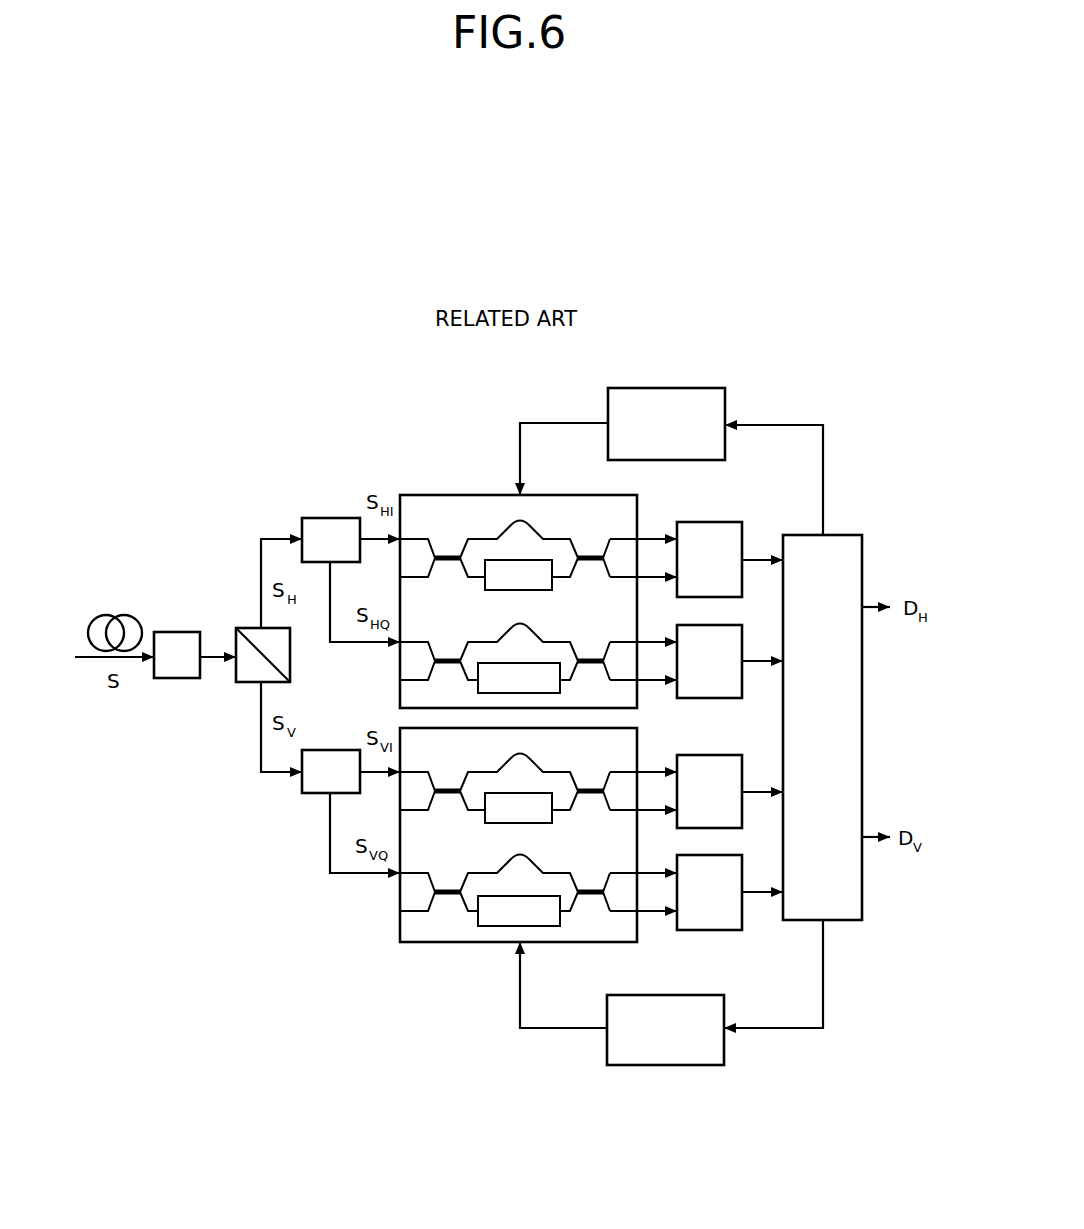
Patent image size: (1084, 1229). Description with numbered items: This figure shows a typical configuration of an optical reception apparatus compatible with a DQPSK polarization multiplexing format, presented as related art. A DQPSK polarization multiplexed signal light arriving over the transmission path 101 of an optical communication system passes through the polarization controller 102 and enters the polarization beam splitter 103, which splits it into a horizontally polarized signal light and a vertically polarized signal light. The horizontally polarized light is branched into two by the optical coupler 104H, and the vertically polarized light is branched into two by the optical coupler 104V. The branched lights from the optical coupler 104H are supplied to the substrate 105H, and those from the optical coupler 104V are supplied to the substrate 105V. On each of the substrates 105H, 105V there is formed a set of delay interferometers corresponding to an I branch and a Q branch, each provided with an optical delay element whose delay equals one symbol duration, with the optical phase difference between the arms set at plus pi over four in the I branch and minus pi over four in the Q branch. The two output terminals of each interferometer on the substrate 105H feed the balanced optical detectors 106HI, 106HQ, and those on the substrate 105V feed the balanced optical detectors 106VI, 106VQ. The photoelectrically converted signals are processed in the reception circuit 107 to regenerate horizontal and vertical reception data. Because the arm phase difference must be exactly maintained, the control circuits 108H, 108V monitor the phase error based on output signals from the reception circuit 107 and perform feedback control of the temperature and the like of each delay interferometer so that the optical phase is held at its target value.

The transmission path 101 is at (113, 615).
The polarization controller 102 is at (170, 632).
The polarization beam splitter 103 is at (243, 628).
The optical coupler 104H is at (318, 518).
The optical coupler 104V is at (312, 793).
The substrate 105H is at (443, 495).
The substrate 105V is at (436, 942).
The balanced optical detector 106HI is at (717, 522).
The balanced optical detector 106HQ is at (700, 698).
The balanced optical detector 106VI is at (719, 755).
The balanced optical detector 106VQ is at (700, 930).
The reception circuit 107 is at (843, 535).
The control circuit 108H is at (685, 388).
The control circuit 108V is at (678, 1065).